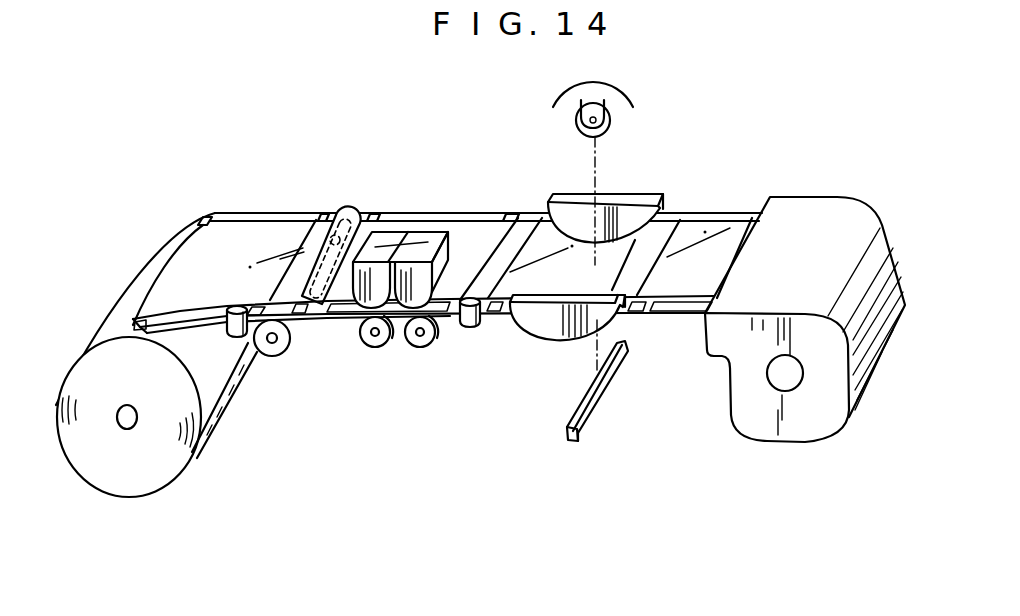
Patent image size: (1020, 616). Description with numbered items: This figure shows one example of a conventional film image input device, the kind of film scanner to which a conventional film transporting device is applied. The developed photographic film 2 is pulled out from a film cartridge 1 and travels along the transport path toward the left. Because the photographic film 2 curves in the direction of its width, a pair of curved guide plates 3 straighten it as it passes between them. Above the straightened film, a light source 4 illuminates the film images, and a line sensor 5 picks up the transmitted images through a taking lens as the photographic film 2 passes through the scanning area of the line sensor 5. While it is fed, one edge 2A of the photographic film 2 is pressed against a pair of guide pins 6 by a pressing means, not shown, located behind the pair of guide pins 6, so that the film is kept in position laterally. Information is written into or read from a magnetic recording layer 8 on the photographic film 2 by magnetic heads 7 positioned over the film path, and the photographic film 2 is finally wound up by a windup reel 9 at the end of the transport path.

The film cartridge 1 is at (772, 420).
The photographic film 2 is at (713, 207).
The edge 2A is at (315, 313).
The curved guide plates 3 is at (633, 205).
The light source 4 is at (577, 132).
The line sensor 5 is at (577, 410).
The guide pins 6 is at (232, 337).
The magnetic heads 7 is at (380, 277).
The magnetic recording layer 8 is at (345, 312).
The windup reel 9 is at (130, 480).